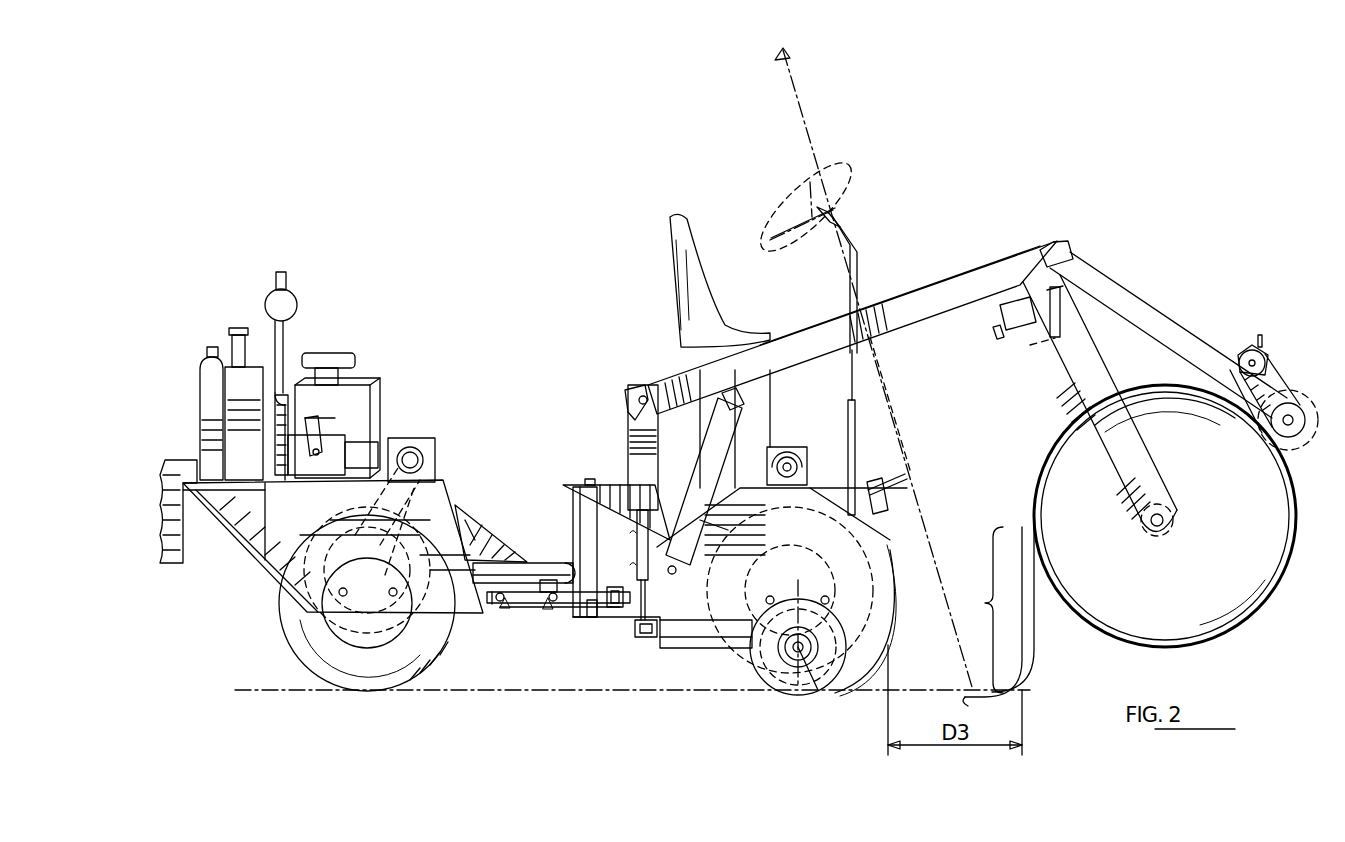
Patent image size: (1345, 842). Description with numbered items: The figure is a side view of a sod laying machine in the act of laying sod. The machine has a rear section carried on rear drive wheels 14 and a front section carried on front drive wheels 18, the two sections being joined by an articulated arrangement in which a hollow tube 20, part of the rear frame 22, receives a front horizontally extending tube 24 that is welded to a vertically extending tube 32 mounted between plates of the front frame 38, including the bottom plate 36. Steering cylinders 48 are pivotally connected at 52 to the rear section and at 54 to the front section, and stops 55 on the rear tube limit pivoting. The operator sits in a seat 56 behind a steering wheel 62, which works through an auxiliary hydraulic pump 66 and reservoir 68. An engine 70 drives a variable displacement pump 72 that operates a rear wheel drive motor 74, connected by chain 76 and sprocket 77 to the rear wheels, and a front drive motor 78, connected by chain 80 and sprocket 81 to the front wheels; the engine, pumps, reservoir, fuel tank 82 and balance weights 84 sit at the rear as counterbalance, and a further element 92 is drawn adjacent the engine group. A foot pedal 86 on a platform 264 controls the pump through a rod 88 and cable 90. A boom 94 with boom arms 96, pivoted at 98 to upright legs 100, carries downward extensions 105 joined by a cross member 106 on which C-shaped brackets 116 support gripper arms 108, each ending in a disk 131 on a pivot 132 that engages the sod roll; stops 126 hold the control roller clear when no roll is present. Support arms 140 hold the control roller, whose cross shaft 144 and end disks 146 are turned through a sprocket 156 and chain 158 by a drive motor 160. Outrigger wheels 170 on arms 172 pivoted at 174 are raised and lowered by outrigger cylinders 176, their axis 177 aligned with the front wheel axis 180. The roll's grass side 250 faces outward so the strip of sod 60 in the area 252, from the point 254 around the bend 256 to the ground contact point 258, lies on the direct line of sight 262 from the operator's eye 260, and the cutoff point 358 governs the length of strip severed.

The rear drive wheels 14 is at (285, 630).
The front drive wheels 18 is at (892, 618).
The hollow tube 20 is at (527, 562).
The frame 22 is at (487, 538).
The front horizontally extending tube 24 is at (568, 568).
The vertically extending tube 32 is at (573, 500).
The bottom plate 36 is at (595, 617).
The frame 38 is at (600, 482).
The steering cylinders 48 is at (527, 605).
The pivotal connection 52 is at (500, 605).
The pivotal connection 54 is at (615, 610).
The stops 55 is at (553, 605).
The seat 56 is at (672, 258).
The strip of sod 60 is at (1036, 598).
The steering wheel 62 is at (838, 182).
The auxiliary hydraulic pump 66 is at (365, 455).
The hydraulic reservoir 68 is at (244, 404).
The engine 70 is at (355, 378).
The variable displacement hydraulic pump 72 is at (318, 485).
The rear wheel hydraulic drive motor 74 is at (420, 443).
The chain 76 is at (440, 481).
The sprocket 77 is at (367, 550).
The front hydraulic drive motor 78 is at (790, 445).
The chain 80 is at (775, 503).
The sprocket 81 is at (790, 590).
The fuel tank 82 is at (207, 372).
The balance weights 84 is at (182, 458).
The foot pedal 86 is at (888, 482).
The rod 88 is at (845, 478).
The cable 90 is at (322, 428).
The transmission 92 is at (338, 432).
The boom 94 is at (662, 357).
The boom arms 96 is at (930, 278).
The pivot 98 is at (640, 395).
The upright leg 100 is at (628, 440).
The downward extensions 105 is at (1002, 313).
The cross member 106 is at (998, 336).
The gripper arms 108 is at (1078, 360).
The C-shaped bracket 116 is at (1062, 314).
The stops 126 is at (1072, 268).
The disk 131 is at (1176, 514).
The pivot 132 is at (1163, 526).
The support arms 140 is at (1150, 312).
The cross shaft 144 is at (1300, 446).
The end disks 146 is at (1264, 438).
The sprocket 156 is at (1298, 403).
The chain 158 is at (1285, 385).
The drive motor 160 is at (1250, 348).
The outrigger wheels 170 is at (782, 686).
The arms 172 is at (700, 646).
The pivotal connection 174 is at (650, 640).
The outrigger cylinders 176 is at (638, 550).
The axis 177 is at (824, 688).
The axis 180 is at (758, 572).
The grass side 250 is at (1040, 460).
The area 252 is at (969, 602).
The point 254 is at (1025, 522).
The bend 256 is at (1040, 680).
The ground contact point 258 is at (972, 702).
The operator's eye 260 is at (778, 52).
The line of sight 262 is at (895, 410).
The platform 264 is at (910, 486).
The cutoff point 358 is at (1205, 408).